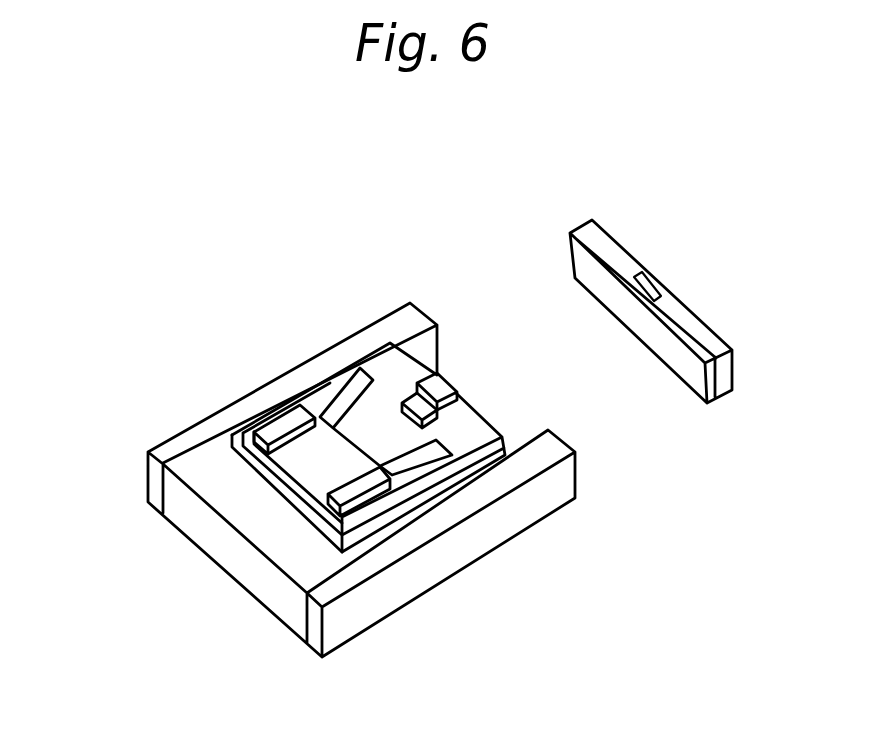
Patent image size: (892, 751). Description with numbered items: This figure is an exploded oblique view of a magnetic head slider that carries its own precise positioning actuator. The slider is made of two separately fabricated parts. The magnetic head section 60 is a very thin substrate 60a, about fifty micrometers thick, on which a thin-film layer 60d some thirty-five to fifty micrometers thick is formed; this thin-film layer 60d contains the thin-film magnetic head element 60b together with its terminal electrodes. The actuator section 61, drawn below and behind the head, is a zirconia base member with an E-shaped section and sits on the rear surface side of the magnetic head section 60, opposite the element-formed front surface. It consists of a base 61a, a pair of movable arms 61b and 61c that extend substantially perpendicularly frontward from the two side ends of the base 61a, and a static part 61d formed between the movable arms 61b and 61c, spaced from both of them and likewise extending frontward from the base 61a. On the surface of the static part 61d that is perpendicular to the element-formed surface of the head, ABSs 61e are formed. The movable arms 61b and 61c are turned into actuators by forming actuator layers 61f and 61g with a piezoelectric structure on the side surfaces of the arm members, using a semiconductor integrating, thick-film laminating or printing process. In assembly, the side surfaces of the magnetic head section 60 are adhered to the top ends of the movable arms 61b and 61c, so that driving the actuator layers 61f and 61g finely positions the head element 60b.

The magnetic head section 60 is at (633, 143).
The substrate 60a is at (572, 232).
The thin-film magnetic head element 60b is at (652, 277).
The thin-film layer 60d is at (597, 230).
The actuator section 61 is at (287, 316).
The base 61a is at (260, 537).
The movable arm 61b is at (410, 327).
The movable arm 61c is at (523, 457).
The static part 61d is at (475, 422).
The ABSs 61e is at (440, 385).
The actuator layer 61f is at (345, 347).
The actuator layer 61g is at (438, 562).